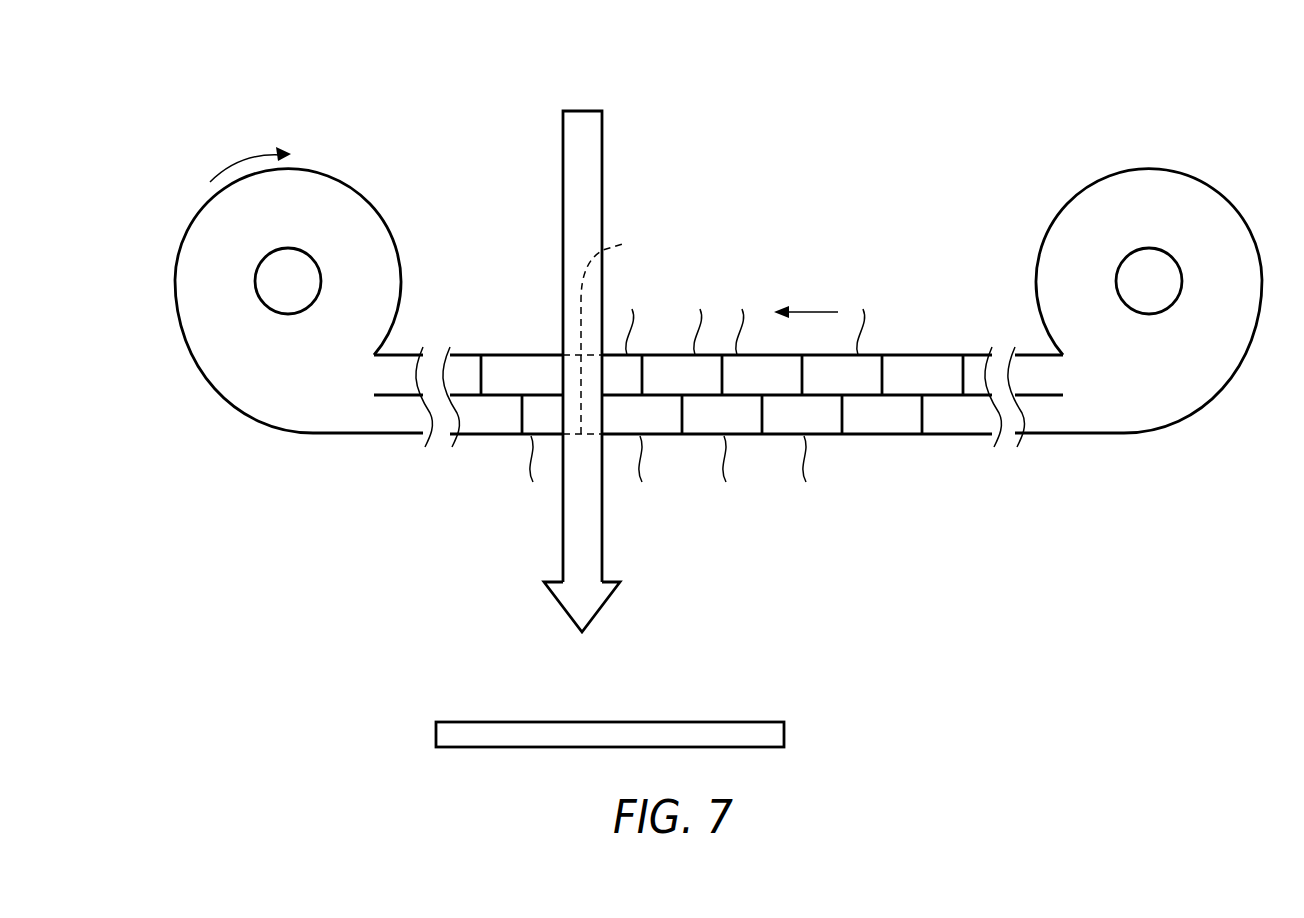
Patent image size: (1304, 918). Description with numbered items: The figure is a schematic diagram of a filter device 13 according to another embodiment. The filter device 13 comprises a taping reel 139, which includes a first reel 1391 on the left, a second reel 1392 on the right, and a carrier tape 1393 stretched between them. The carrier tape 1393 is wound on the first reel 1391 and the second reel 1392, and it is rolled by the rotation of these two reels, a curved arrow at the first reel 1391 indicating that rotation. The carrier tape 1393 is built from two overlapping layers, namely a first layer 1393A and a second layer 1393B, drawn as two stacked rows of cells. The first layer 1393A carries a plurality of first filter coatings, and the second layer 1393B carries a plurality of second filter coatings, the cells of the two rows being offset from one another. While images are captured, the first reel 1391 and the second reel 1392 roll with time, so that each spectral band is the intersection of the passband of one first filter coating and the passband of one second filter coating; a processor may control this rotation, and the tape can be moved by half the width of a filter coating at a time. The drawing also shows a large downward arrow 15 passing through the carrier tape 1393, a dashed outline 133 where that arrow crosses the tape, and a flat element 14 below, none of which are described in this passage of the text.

The filter device 13 is at (1142, 128).
The image sensor 14 is at (785, 735).
The light beam 15 is at (582, 111).
The light passing region 133 is at (618, 331).
The taping reel 139 is at (1032, 217).
The first reel 1391 is at (294, 271).
The second reel 1392 is at (1153, 270).
The carrier tape 1393 is at (927, 345).
The first layer 1393A is at (471, 453).
The second layer 1393B is at (494, 344).